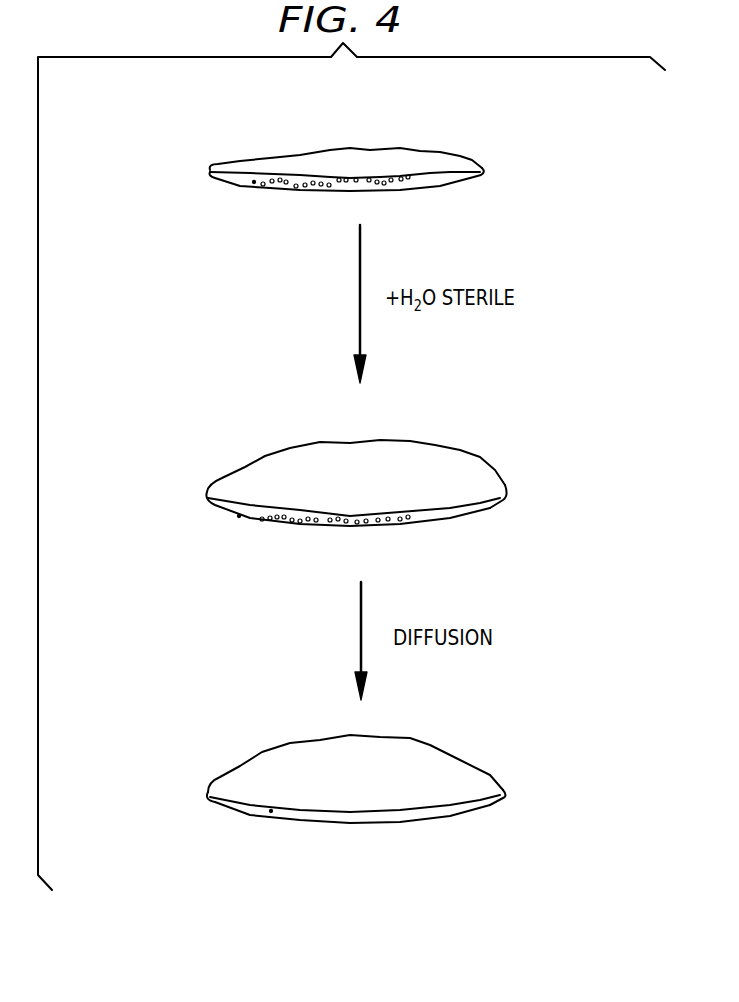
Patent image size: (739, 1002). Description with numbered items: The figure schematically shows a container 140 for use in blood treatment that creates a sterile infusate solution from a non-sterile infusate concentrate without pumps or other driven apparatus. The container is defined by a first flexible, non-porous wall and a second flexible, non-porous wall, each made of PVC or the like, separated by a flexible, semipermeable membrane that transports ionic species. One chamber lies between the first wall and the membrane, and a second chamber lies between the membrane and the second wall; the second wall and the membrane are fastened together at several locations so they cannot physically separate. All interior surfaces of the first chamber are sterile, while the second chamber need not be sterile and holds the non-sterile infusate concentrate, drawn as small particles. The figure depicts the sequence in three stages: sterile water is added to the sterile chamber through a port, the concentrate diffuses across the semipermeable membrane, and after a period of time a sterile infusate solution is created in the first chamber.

The container 140 is at (150, 153).